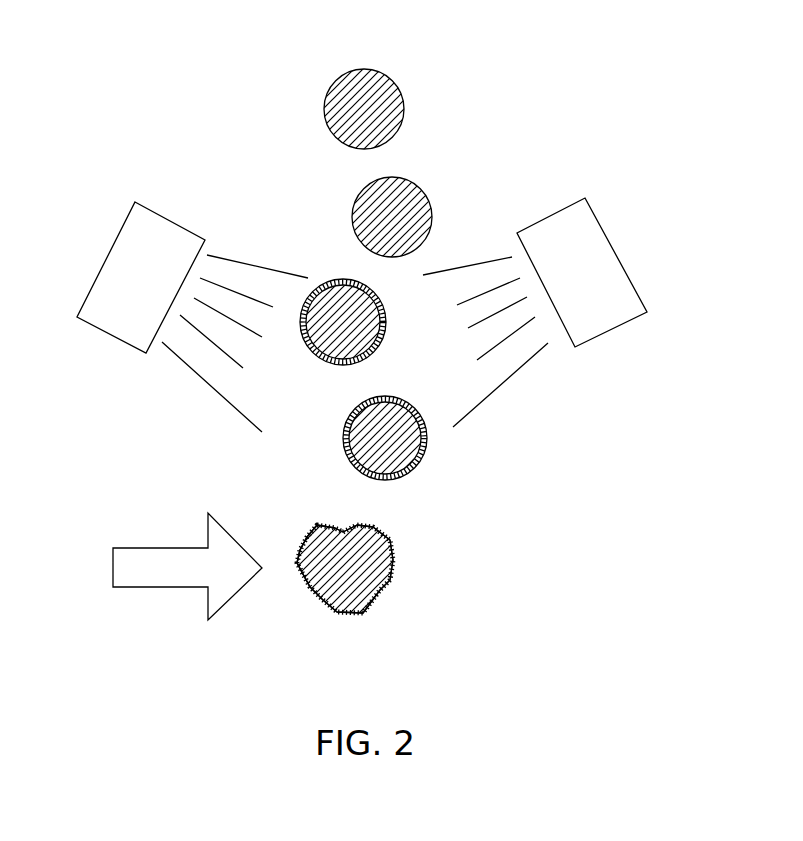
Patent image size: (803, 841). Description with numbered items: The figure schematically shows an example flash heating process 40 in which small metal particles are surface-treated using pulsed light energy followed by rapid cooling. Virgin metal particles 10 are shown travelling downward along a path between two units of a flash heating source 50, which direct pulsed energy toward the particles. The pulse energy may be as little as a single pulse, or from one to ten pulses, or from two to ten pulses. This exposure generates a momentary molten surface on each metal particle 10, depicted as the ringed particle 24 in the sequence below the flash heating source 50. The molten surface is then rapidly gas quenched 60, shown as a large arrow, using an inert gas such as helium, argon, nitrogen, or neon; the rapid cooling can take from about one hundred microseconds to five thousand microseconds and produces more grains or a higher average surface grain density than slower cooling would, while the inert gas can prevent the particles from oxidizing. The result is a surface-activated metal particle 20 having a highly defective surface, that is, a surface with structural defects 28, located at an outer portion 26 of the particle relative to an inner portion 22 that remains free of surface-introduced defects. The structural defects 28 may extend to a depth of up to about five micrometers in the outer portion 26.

The metal particles 10 is at (397, 67).
The surface-activated metal particles 20 is at (372, 584).
The inner portion 22 is at (390, 542).
The partially coated particle 24 is at (423, 448).
The outer portion 26 is at (395, 567).
The structural defects 28 is at (316, 601).
The flash heating process 40 is at (172, 73).
The flash heating source 50 is at (125, 289).
The gas quenching 60 is at (172, 581).